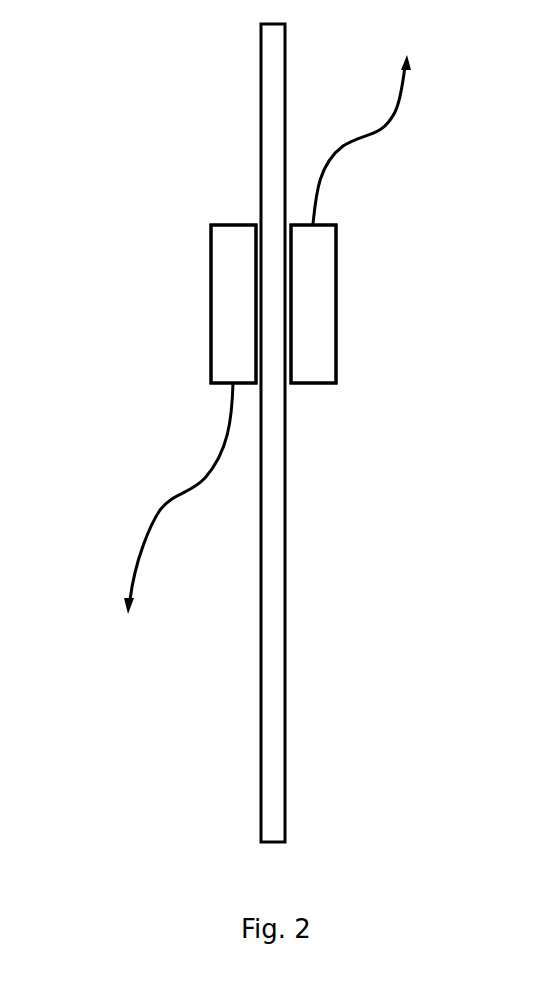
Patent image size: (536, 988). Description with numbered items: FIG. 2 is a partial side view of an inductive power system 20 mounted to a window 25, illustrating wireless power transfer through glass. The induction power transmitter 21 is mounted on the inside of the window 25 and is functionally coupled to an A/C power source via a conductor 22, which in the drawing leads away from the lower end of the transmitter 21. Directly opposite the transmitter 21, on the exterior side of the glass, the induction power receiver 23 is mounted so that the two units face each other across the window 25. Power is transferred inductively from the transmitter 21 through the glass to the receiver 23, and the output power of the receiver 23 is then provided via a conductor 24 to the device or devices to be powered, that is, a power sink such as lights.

The cooling/heating assembly 20 is at (128, 440).
The induction power transmitter 21 is at (223, 303).
The conductor 22 is at (158, 515).
The induction power receiver 23 is at (312, 348).
The conductor 24 is at (385, 128).
The window 25 is at (273, 472).